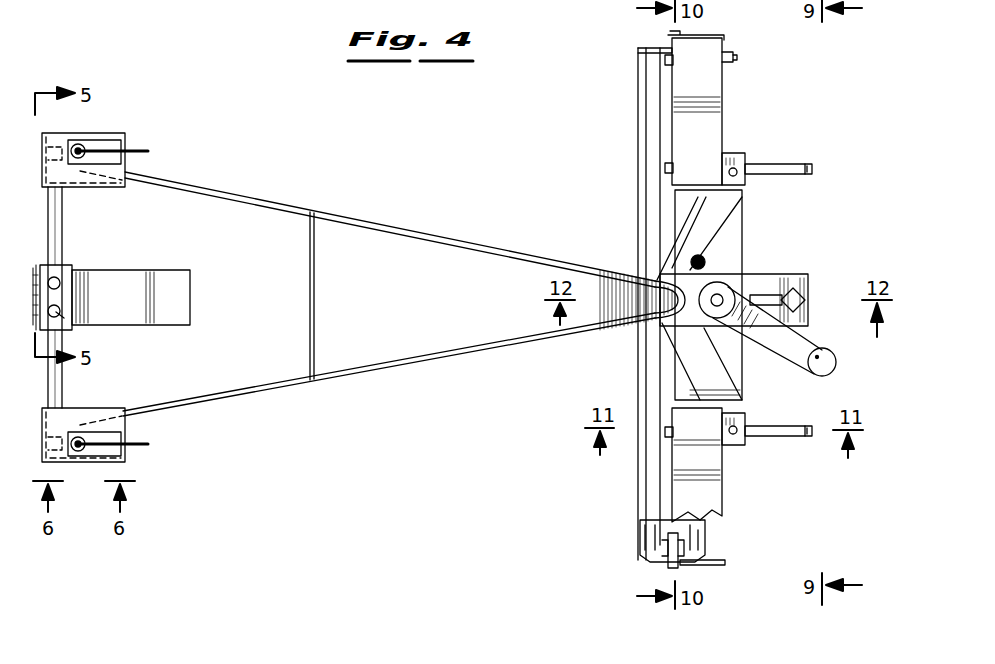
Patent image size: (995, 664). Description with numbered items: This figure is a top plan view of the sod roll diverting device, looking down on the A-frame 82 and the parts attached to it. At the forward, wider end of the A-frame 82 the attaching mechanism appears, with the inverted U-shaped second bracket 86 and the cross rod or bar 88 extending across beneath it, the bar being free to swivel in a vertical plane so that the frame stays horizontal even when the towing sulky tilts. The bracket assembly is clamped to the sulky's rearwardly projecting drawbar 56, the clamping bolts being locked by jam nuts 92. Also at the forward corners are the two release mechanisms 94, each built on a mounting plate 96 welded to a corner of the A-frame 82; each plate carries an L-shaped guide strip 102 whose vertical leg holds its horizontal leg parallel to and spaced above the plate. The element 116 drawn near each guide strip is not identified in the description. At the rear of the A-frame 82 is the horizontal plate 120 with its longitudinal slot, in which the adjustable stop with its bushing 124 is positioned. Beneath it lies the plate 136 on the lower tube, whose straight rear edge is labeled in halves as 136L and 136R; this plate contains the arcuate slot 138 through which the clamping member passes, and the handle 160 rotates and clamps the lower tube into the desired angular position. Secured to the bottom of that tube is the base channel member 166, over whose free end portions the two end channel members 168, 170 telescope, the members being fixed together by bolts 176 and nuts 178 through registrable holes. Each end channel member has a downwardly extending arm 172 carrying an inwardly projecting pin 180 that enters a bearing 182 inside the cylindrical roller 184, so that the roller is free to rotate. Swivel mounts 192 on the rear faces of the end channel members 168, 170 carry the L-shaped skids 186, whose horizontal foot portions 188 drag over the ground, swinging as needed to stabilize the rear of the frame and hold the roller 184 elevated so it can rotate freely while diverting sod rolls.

The drawbar 56 is at (150, 272).
The A-frame 82 is at (404, 371).
The second bracket 86 is at (75, 278).
The cross rod or bar 88 is at (65, 213).
The jam nuts 92 is at (60, 282).
The release mechanisms 94 is at (97, 140).
The mounting plate 96 is at (128, 162).
The L-shaped guide strip 102 is at (112, 138).
The pin 116 is at (148, 150).
The horizontal plate 120 is at (780, 272).
The bushing 124 is at (806, 296).
The plate 136 is at (663, 262).
The right half of rear edge of plate 136R is at (745, 212).
The left half of rear edge of plate 136L is at (742, 370).
The arcuate slot 138 is at (705, 262).
The handle 160 is at (800, 330).
The channel member 166 is at (672, 212).
The end channel member 168 is at (722, 496).
The end channel member 170 is at (722, 110).
The arm 172 is at (712, 565).
The bolts 176 is at (665, 62).
The nuts 178 is at (727, 55).
The pins 180 is at (670, 562).
The bearings 182 is at (655, 526).
The cylindrical roller 184 is at (580, 0).
The L-shaped skids 186 is at (806, 163).
The horizontal foot portion 188 is at (782, 164).
The swivel mounts 192 is at (744, 152).